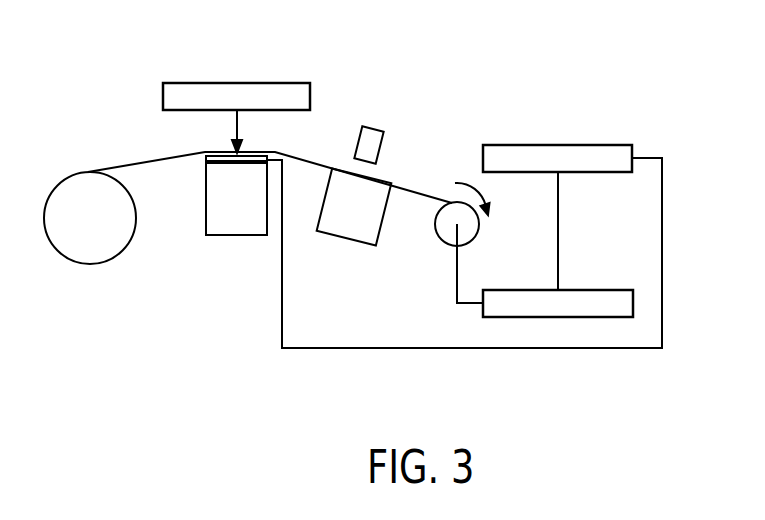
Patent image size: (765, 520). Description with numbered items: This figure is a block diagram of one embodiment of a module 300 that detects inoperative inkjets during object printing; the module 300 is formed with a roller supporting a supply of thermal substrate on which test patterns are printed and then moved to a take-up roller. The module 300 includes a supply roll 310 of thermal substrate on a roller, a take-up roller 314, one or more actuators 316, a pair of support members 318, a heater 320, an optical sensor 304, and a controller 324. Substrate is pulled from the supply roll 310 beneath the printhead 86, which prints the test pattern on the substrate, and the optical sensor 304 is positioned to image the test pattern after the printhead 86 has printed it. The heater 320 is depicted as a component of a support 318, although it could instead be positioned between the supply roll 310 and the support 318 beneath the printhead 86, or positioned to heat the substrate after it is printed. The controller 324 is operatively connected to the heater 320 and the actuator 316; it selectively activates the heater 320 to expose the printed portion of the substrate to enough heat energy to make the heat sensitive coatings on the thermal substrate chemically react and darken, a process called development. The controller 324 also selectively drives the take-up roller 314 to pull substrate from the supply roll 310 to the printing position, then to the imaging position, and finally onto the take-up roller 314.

The module 300 is at (434, 76).
The supply roll 310 is at (75, 174).
The heater 320 is at (205, 152).
The printhead 86 is at (235, 83).
The support members 318 is at (267, 232).
The optical sensor 304 is at (382, 128).
The take-up roller 314 is at (482, 221).
The actuator 316 is at (533, 290).
The controller 324 is at (560, 145).